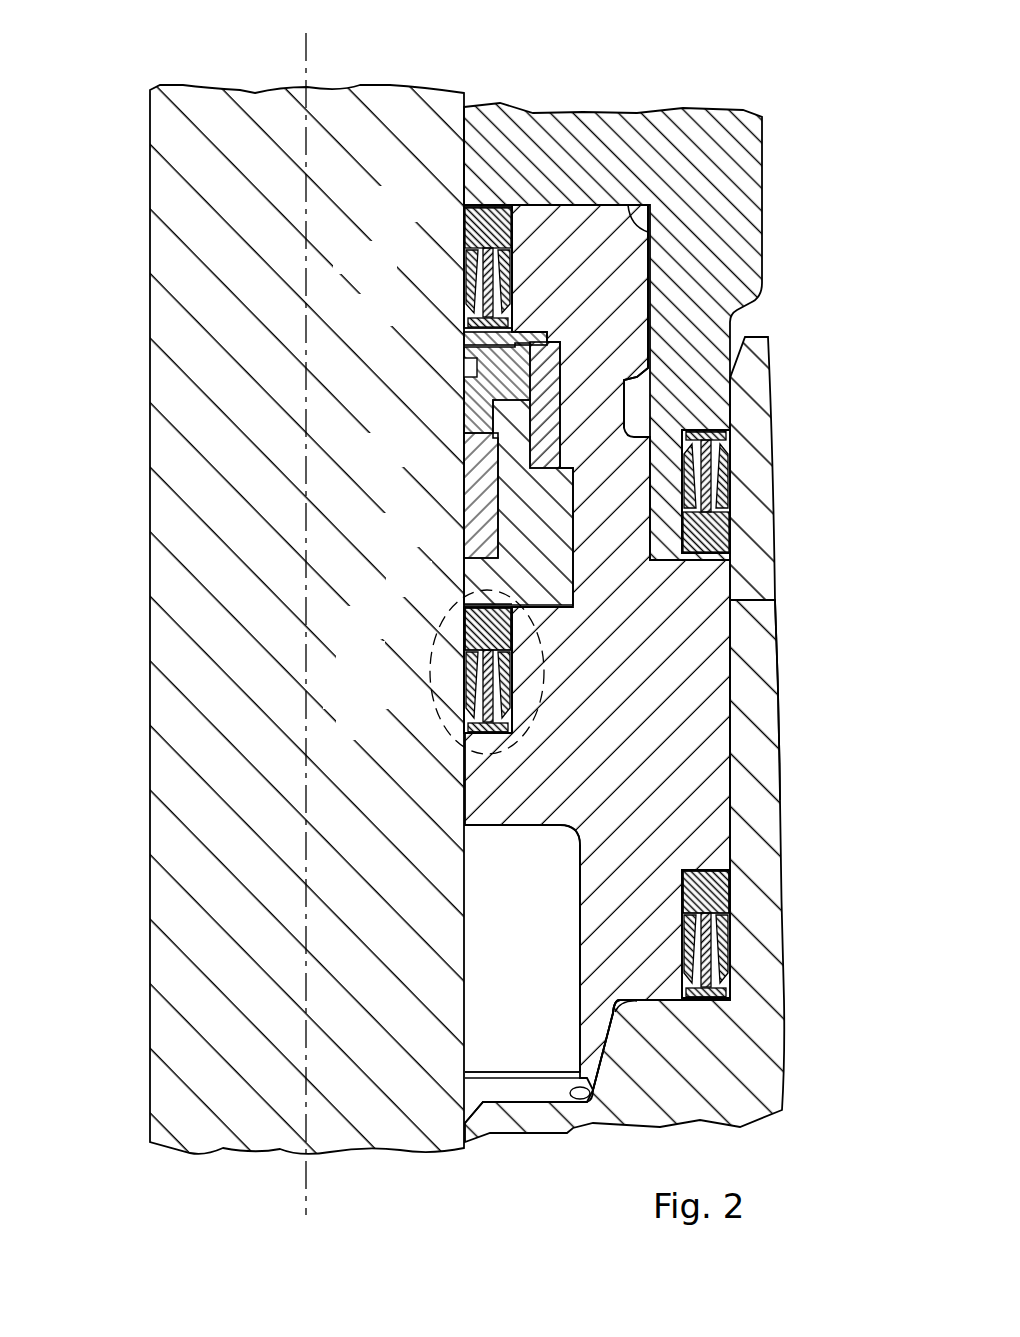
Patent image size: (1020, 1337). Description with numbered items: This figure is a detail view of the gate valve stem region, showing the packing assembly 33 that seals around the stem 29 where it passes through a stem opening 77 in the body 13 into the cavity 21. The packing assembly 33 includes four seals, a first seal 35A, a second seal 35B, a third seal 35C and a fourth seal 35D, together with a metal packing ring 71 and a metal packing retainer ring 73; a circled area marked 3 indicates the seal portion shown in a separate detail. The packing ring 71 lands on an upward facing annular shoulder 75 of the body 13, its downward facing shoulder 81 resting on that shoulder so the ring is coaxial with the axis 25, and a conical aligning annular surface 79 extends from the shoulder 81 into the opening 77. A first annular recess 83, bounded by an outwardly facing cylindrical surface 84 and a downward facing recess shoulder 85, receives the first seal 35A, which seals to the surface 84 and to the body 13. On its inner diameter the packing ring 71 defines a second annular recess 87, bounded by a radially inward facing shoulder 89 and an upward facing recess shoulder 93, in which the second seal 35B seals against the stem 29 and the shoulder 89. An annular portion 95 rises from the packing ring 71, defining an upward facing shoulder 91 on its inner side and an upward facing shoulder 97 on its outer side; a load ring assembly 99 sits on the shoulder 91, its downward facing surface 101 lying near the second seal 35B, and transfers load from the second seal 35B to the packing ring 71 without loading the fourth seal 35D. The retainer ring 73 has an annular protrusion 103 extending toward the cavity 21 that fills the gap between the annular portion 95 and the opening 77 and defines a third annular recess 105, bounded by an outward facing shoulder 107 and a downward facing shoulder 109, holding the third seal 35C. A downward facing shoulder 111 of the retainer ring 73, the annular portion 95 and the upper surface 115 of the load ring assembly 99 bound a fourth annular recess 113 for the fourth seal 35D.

The body 13 is at (760, 596).
The cavity 21 is at (478, 1088).
The axis 25 is at (306, 44).
The stem 29 is at (160, 135).
The detail view indication 3 is at (540, 690).
The packing assembly 33 is at (755, 804).
The first seal 35A is at (740, 960).
The second seal 35B is at (510, 694).
The third seal 35C is at (717, 535).
The fourth seal 35D is at (464, 215).
The packing ring 71 is at (713, 792).
The packing retainer ring 73 is at (610, 118).
The upward facing annular shoulder 75 is at (673, 985).
The stem opening 77 is at (585, 1097).
The aligning annular surface 79 is at (590, 1037).
The downward facing shoulder 81 is at (620, 1007).
The first annular recess 83 is at (765, 970).
The outwardly facing cylindrical surface 84 is at (690, 888).
The downward facing recess shoulder 85 is at (735, 878).
The second annular recess 87 is at (450, 668).
The radially inward facing shoulder 89 is at (540, 657).
The upward facing shoulder 91 is at (464, 578).
The upward facing recess shoulder 93 is at (464, 724).
The annular portion 95 is at (633, 317).
The upward facing shoulder 97 is at (735, 545).
The load ring assembly 99 is at (445, 455).
The downward facing surface 101 is at (464, 622).
The annular protrusion 103 is at (720, 412).
The third annular recess 105 is at (750, 490).
The outward facing shoulder 107 is at (683, 522).
The downward facing shoulder 109 is at (727, 446).
The downward facing shoulder 111 is at (655, 247).
The fourth annular recess 113 is at (443, 276).
The upper surface 115 is at (470, 332).